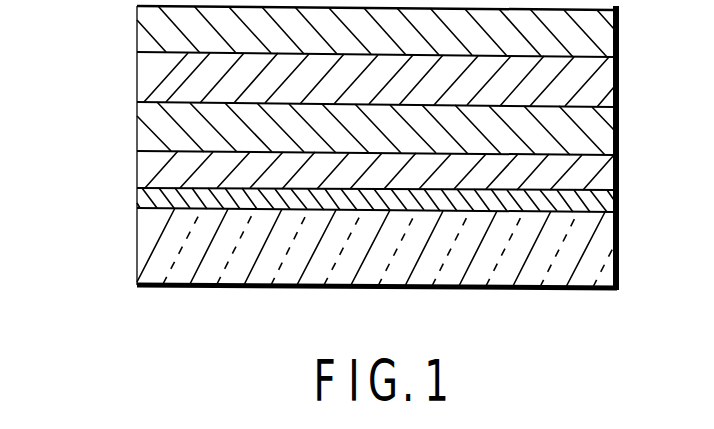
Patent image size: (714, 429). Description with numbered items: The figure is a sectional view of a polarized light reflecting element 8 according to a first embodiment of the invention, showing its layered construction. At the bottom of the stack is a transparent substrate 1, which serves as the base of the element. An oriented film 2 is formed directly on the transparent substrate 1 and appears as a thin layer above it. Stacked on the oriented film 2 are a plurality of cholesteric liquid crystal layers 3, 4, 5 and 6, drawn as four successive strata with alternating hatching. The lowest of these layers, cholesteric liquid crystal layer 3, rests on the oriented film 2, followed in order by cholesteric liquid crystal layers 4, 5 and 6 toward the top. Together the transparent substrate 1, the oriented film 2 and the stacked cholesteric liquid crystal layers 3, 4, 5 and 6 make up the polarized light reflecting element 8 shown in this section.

The transparent substrate 1 is at (603, 247).
The oriented film 2 is at (604, 203).
The cholesteric liquid crystal layer 3 is at (604, 175).
The cholesteric liquid crystal layer 4 is at (604, 132).
The cholesteric liquid crystal layer 5 is at (604, 80).
The cholesteric liquid crystal layer 6 is at (604, 32).
The polarized light reflecting element 8 is at (101, 151).